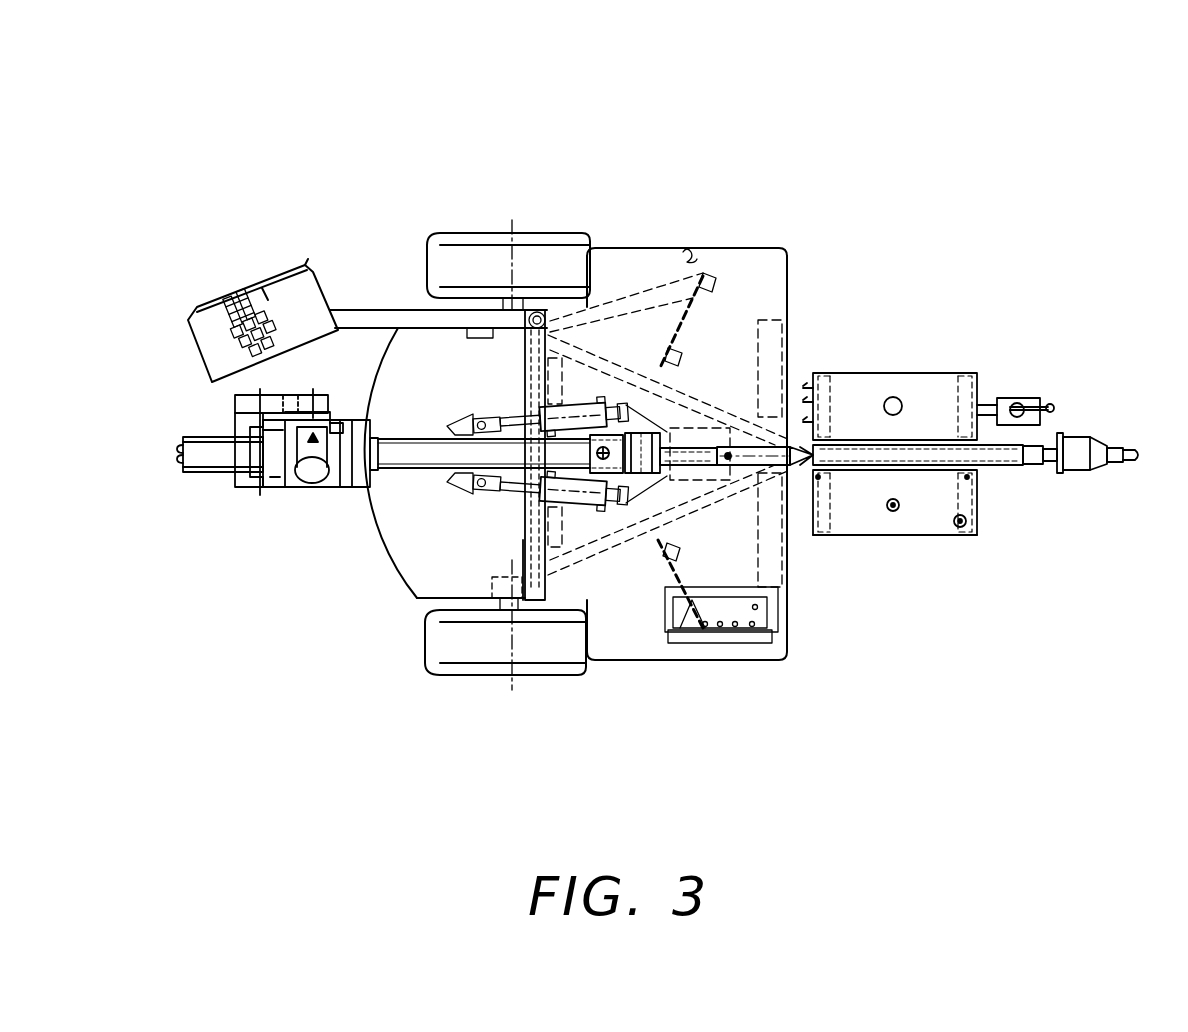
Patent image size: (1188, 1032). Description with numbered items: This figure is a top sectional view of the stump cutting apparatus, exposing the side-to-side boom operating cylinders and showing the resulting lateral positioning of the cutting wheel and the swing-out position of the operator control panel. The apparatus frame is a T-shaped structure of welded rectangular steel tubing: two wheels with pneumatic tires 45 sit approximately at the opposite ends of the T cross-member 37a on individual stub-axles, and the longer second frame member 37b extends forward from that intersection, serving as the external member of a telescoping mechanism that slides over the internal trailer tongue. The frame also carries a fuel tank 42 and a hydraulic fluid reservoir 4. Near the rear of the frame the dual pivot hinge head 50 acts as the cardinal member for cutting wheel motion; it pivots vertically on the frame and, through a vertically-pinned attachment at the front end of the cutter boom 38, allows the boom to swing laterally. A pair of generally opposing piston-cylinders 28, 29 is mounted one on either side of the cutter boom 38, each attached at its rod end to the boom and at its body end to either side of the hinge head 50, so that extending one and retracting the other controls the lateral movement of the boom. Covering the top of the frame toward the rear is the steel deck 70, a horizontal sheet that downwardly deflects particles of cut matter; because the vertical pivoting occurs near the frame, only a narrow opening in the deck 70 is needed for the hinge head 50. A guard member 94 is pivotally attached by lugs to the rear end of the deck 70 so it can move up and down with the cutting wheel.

The hydraulic fluid reservoir 4 is at (889, 370).
The piston-cylinder 28 is at (583, 503).
The piston-cylinder 29 is at (582, 405).
The T cross-member 37a is at (517, 542).
The second frame member 37b is at (1000, 468).
The cutter boom 38 is at (412, 471).
The fuel tank 42 is at (920, 540).
The wheels with pneumatic tires 45 is at (565, 233).
The dual pivot hinge head 50 is at (658, 425).
The deck 70 is at (700, 252).
The guard member 94 is at (397, 590).